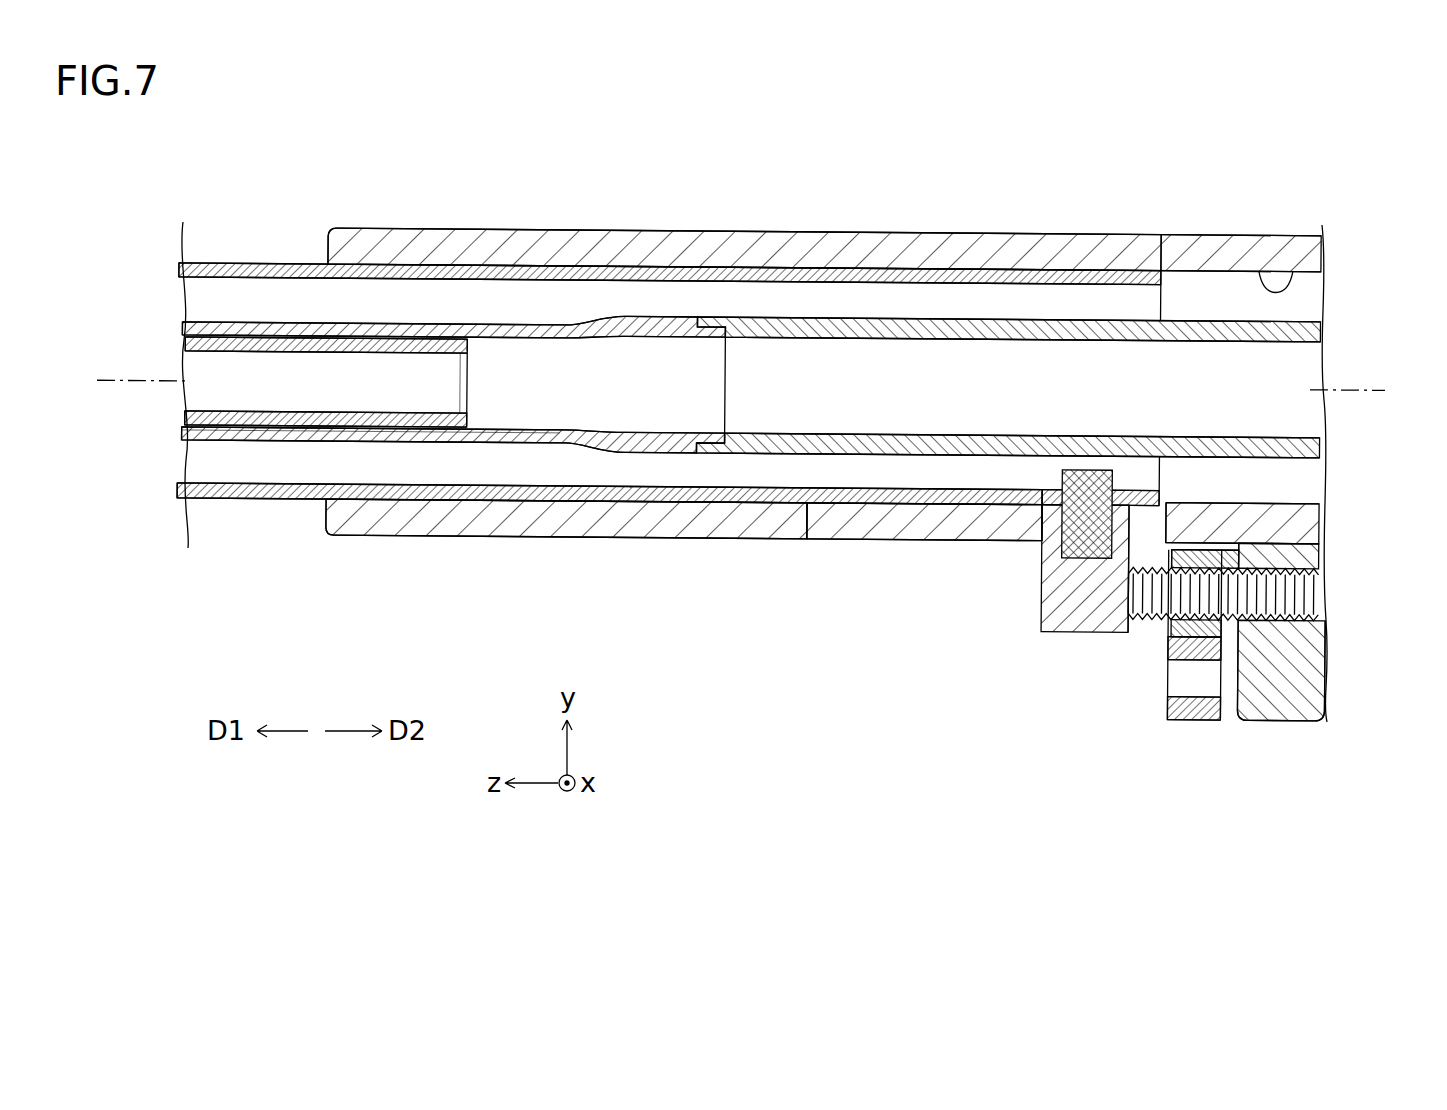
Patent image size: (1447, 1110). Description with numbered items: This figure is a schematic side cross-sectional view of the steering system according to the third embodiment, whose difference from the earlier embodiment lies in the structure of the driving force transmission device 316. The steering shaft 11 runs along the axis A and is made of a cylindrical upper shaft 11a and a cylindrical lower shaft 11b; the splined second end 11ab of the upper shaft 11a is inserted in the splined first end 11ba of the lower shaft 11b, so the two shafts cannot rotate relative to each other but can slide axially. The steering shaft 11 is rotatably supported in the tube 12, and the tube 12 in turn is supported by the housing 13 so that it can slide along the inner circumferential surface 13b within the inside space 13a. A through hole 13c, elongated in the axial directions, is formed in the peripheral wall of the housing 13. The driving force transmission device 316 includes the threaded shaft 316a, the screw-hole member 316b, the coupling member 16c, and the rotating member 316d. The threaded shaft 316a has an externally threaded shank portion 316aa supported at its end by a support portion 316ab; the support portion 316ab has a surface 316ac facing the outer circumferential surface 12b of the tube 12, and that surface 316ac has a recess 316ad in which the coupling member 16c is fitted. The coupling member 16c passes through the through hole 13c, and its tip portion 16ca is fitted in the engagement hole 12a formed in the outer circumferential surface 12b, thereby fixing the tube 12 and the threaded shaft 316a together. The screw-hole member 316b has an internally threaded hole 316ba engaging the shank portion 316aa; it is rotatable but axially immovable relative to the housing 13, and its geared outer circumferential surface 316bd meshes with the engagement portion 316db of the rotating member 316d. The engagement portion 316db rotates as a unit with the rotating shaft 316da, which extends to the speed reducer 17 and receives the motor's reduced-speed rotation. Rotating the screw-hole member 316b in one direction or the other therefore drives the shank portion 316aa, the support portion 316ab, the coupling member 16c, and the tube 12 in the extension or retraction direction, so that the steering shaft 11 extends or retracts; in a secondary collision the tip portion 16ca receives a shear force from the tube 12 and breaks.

The steering shaft 11 is at (235, 312).
The upper shaft 11a is at (230, 427).
The lower shaft 11b is at (372, 443).
The first end of the lower shaft 11ba is at (282, 430).
The second end of the upper shaft 11ab is at (480, 427).
The tube 12 is at (273, 263).
The engagement hole 12a is at (1063, 493).
The outer circumferential surface of the tube 12b is at (643, 540).
The housing 13 is at (390, 228).
The inside space 13a is at (1213, 293).
The inner circumferential surface 13b is at (1293, 273).
The through hole 13c is at (800, 540).
The coupling member 16c is at (1083, 548).
The tip portion 16ca is at (1120, 463).
The speed reducer 17 is at (1328, 680).
The driving force transmission device 316 is at (911, 655).
The threaded shaft 316a is at (1120, 797).
The shank portion 316aa is at (1140, 628).
The support portion 316ab is at (1050, 632).
The surface of the support portion 316ac is at (1050, 498).
The recess 316ad is at (1053, 593).
The screw-hole member 316b is at (1170, 630).
The internally threaded hole 316ba is at (1280, 690).
The outer circumferential surface of the screw-hole member 316bd is at (1232, 552).
The rotating member 316d is at (1320, 825).
The rotating shaft 316da is at (1205, 600).
The engagement portion 316db is at (1183, 722).
The axis A is at (130, 382).